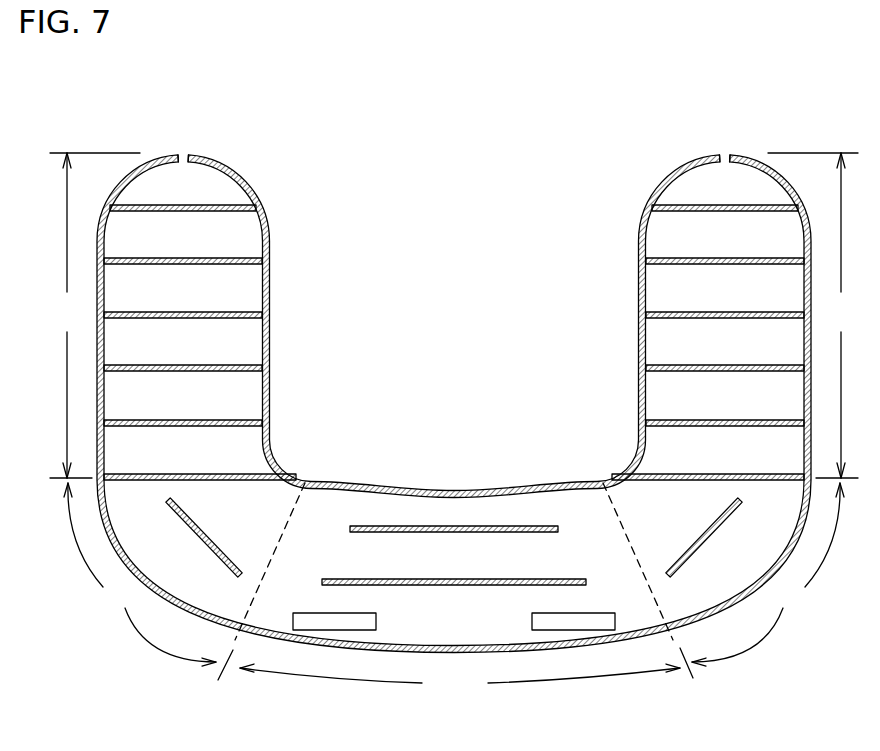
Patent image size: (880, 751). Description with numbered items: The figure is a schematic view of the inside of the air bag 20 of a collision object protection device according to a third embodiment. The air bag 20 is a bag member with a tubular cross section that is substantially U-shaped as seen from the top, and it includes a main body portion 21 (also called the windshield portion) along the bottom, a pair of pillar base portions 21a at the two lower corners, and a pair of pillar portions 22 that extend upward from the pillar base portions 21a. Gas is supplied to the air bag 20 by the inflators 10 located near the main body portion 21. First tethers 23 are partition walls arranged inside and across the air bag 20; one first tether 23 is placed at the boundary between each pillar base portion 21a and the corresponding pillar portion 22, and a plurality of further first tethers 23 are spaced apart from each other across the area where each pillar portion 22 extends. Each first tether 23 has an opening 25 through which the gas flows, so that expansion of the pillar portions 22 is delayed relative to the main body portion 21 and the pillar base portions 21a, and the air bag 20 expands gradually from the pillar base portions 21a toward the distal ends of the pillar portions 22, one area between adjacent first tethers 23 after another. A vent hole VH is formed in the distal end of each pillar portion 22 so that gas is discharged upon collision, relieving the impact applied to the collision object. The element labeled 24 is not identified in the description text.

The inflator 10 is at (350, 630).
The air bag 20 is at (455, 173).
The main body portion 21 is at (455, 674).
The pillar base portion 21a is at (454, 574).
The pillar portion 22 is at (454, 315).
The first tether 23 is at (258, 263).
The plate member 24 is at (197, 527).
The opening 25 is at (187, 207).
The vent hole VH is at (186, 150).